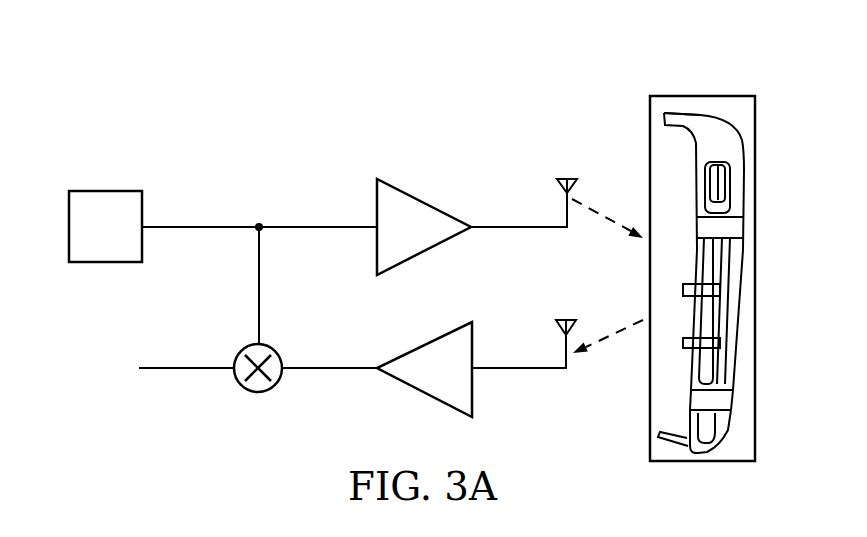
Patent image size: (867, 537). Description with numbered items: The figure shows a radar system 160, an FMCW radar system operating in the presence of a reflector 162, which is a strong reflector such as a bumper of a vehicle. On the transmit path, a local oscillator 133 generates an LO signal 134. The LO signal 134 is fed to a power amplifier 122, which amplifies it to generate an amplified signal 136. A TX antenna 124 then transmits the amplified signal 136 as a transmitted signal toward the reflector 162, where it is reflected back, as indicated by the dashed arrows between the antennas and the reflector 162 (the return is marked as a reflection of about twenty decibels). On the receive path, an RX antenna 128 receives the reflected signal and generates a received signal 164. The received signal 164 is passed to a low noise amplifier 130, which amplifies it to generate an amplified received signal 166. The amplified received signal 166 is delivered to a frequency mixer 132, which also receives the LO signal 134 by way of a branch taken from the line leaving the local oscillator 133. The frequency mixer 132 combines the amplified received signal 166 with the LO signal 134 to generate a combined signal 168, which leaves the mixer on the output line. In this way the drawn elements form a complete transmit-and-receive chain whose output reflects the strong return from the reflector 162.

The radar system 160 is at (285, 97).
The local oscillator 133 is at (103, 190).
The LO signal 134 is at (200, 225).
The power amplifier 122 is at (425, 200).
The amplified signal 136 is at (507, 225).
The TX antenna 124 is at (569, 178).
The reflector 162 is at (700, 94).
The RX antenna 128 is at (558, 327).
The received signal 164 is at (518, 372).
The low noise amplifier 130 is at (422, 397).
The amplified received signal 166 is at (330, 372).
The frequency mixer 132 is at (247, 393).
The combined signal 168 is at (188, 372).